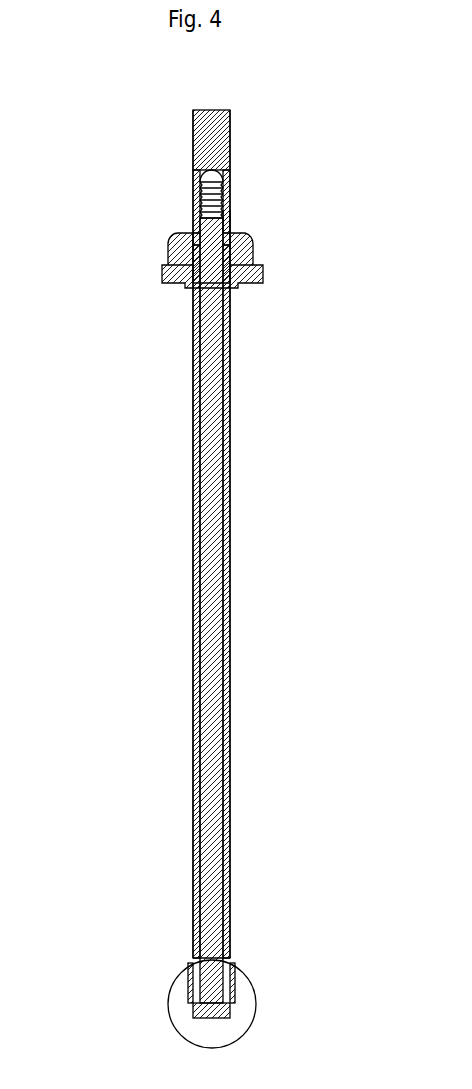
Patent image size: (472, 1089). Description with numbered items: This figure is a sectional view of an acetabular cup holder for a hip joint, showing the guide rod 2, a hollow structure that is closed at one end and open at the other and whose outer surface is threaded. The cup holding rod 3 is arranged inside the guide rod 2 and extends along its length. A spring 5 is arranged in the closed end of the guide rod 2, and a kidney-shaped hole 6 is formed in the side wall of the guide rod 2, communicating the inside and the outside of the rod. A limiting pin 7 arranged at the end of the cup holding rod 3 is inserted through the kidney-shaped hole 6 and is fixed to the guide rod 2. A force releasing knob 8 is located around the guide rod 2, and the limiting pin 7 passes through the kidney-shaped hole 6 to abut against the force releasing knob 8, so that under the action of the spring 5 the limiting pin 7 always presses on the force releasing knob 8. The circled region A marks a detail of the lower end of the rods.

The guide rod 2 is at (224, 511).
The cup holding rod 3 is at (210, 607).
The spring 5 is at (225, 180).
The kidney-shaped hole 6 is at (231, 221).
The limiting pin 7 is at (197, 231).
The force releasing knob 8 is at (171, 252).
The detail region A is at (257, 985).